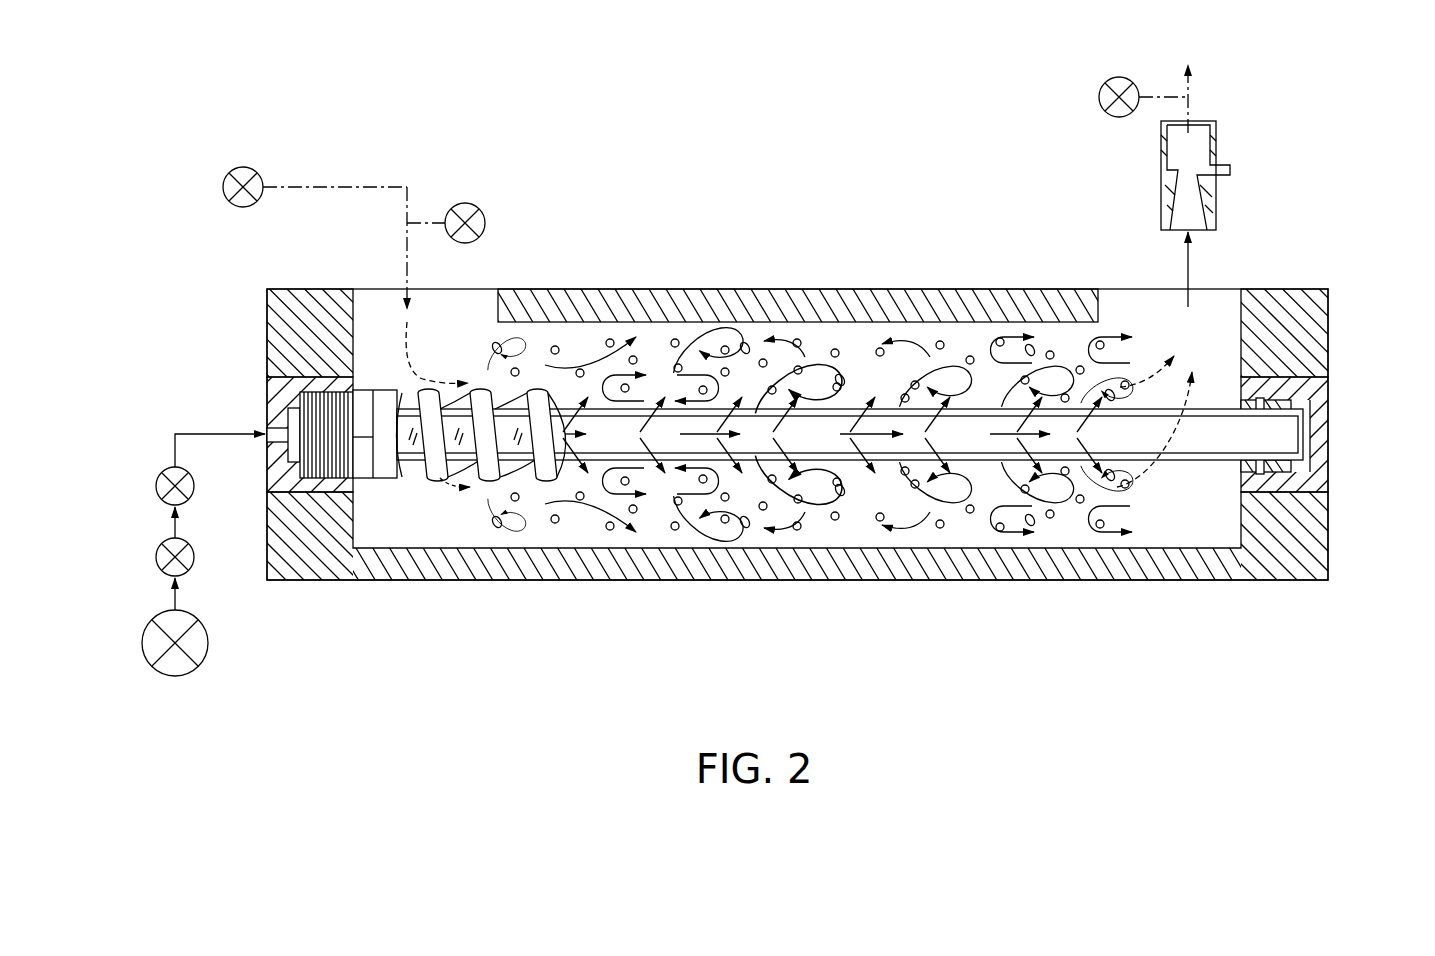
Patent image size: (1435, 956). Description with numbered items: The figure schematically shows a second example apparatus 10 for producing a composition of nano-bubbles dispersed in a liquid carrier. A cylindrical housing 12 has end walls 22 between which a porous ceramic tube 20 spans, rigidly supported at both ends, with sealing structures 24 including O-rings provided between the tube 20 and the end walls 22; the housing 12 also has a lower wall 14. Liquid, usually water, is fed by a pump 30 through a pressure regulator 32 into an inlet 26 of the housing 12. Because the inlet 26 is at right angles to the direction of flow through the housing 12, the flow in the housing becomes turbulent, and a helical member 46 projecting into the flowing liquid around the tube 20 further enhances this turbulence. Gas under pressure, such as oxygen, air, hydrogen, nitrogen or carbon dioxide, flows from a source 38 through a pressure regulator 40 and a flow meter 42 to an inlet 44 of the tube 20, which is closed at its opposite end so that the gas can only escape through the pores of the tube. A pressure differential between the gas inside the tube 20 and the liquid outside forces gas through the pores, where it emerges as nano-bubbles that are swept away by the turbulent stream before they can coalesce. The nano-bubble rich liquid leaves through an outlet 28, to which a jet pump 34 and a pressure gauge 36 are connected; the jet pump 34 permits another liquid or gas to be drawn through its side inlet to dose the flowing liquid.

The apparatus 10 is at (878, 630).
The housing 12 is at (789, 287).
The bottom wall of housing 14 is at (1063, 549).
The ceramic tube 20 is at (600, 462).
The end walls 22 is at (304, 289).
The sealing structures 24 is at (262, 382).
The inlet 26 is at (409, 322).
The outlet 28 is at (1190, 330).
The pump 30 is at (243, 167).
The pressure regulator 32 is at (466, 203).
The jet pump 34 is at (1161, 200).
The pressure gauge 36 is at (1119, 77).
The source of gas under pressure 38 is at (142, 643).
The pressure regulator 40 is at (156, 557).
The flow meter 42 is at (156, 486).
The inlet 44 is at (262, 427).
The helical member 46 is at (448, 479).